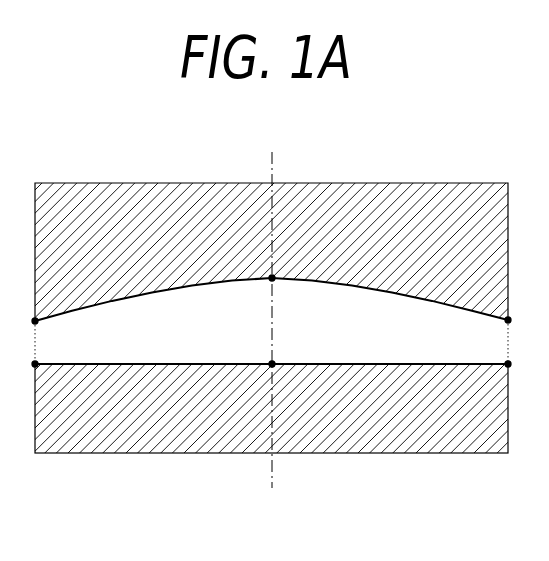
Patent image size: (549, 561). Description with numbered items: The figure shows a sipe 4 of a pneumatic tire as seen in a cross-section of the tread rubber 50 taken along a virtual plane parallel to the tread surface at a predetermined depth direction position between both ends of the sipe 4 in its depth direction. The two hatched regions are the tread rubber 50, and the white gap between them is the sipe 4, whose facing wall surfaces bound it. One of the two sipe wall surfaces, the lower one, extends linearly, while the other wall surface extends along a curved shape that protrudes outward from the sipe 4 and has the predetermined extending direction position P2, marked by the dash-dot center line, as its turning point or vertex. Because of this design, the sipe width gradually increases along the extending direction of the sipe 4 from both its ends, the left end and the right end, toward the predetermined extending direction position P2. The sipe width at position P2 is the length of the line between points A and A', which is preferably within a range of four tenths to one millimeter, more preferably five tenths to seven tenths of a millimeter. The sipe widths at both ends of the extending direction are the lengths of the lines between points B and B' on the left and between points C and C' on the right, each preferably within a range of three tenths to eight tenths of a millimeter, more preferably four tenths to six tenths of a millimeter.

The sipe 4 is at (345, 343).
The tread rubber 50 is at (437, 445).
The predetermined extending direction position P2 is at (272, 311).
The point A of line A-A' A is at (232, 212).
The point B of line B-B' B is at (67, 325).
The point C of line C-C' C is at (473, 323).
The point A' of line A- A' is at (304, 425).
The point B' of line B- B' is at (67, 354).
The point C' of line C- C' is at (475, 352).